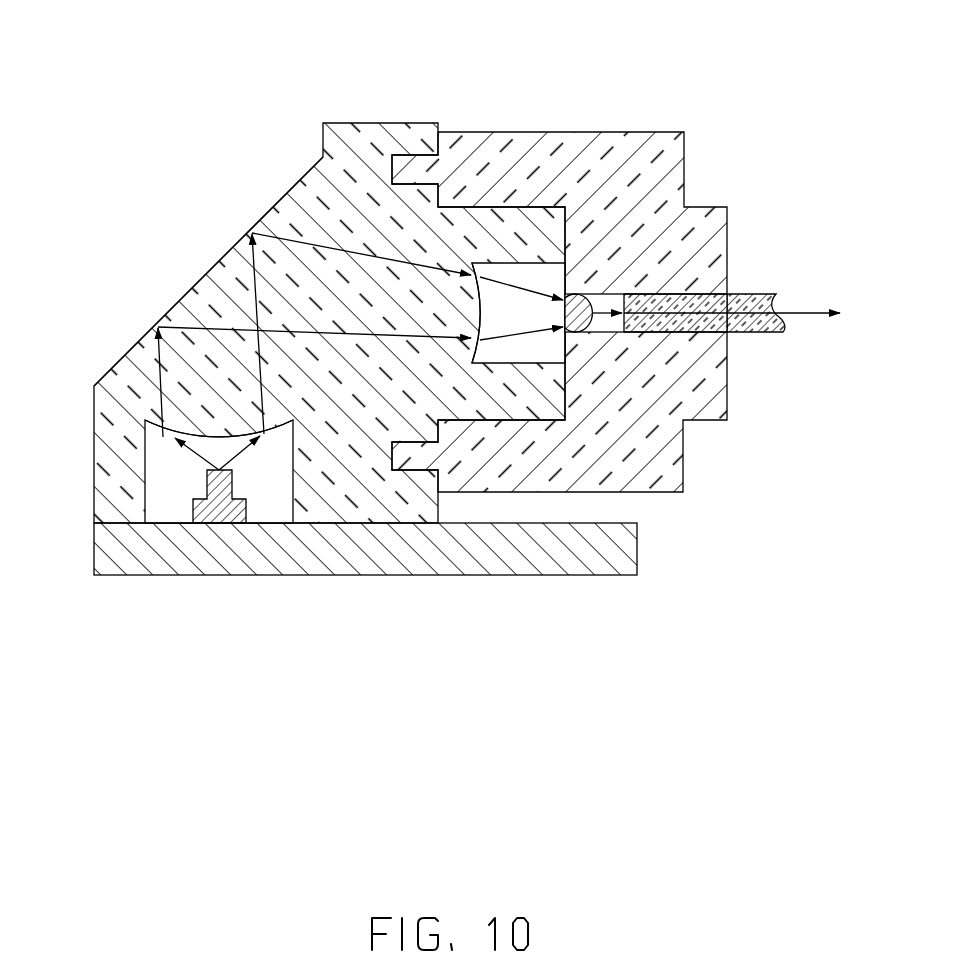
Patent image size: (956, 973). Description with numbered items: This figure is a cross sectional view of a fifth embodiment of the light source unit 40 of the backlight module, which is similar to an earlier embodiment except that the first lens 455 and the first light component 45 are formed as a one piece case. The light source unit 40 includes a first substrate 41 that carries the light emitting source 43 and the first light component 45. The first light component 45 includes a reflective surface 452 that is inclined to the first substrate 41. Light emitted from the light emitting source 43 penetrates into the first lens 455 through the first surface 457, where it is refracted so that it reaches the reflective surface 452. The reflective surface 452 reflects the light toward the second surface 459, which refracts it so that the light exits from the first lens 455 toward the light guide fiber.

The light source unit 40 is at (432, 346).
The first substrate 41 is at (598, 560).
The light emitting source 43 is at (217, 508).
The first light component 45 is at (294, 401).
The reflective surface 452 is at (306, 171).
The first lens 455 is at (397, 347).
The first surface 457 is at (163, 440).
The second surface 459 is at (477, 343).